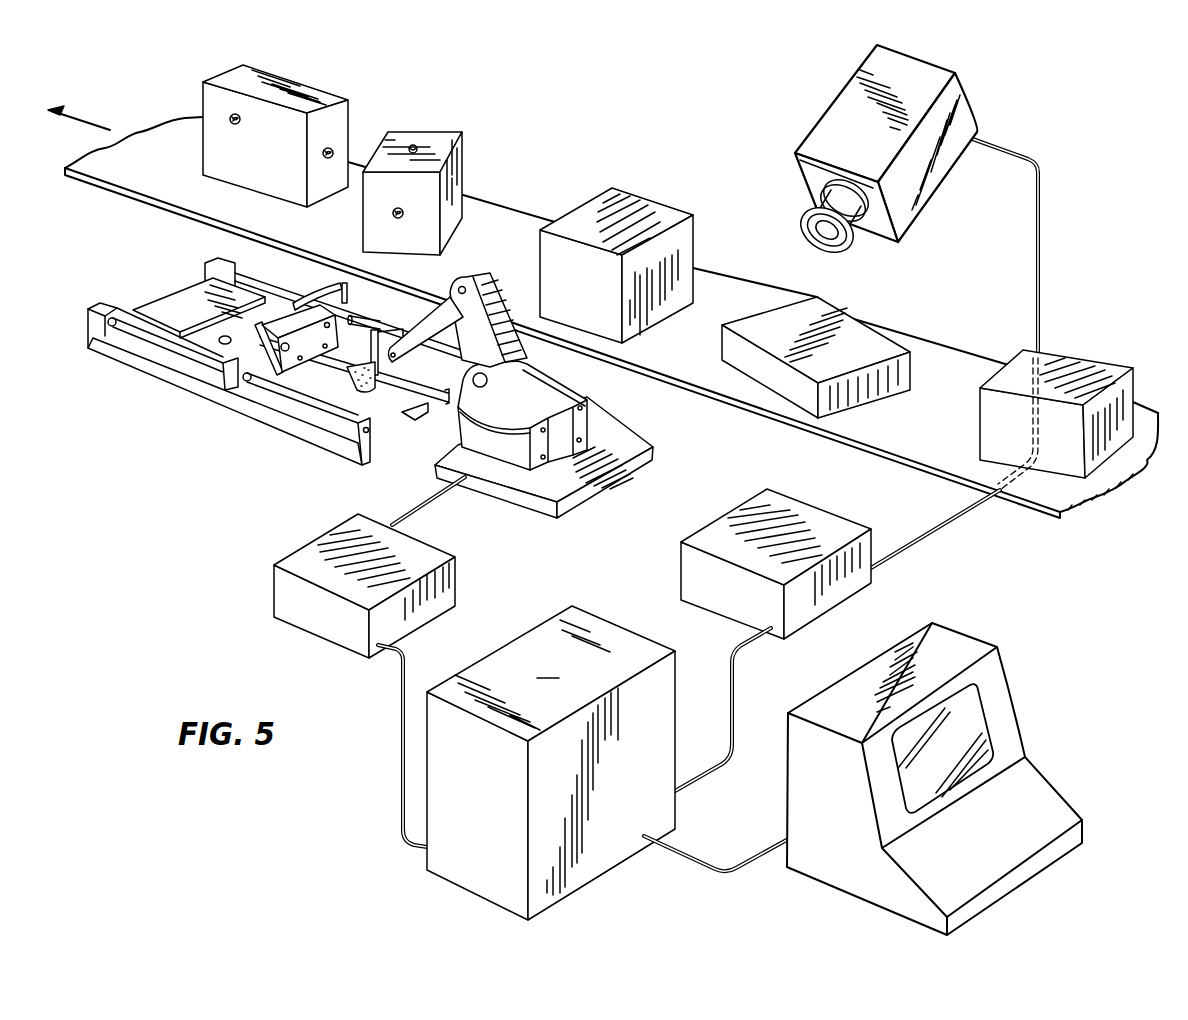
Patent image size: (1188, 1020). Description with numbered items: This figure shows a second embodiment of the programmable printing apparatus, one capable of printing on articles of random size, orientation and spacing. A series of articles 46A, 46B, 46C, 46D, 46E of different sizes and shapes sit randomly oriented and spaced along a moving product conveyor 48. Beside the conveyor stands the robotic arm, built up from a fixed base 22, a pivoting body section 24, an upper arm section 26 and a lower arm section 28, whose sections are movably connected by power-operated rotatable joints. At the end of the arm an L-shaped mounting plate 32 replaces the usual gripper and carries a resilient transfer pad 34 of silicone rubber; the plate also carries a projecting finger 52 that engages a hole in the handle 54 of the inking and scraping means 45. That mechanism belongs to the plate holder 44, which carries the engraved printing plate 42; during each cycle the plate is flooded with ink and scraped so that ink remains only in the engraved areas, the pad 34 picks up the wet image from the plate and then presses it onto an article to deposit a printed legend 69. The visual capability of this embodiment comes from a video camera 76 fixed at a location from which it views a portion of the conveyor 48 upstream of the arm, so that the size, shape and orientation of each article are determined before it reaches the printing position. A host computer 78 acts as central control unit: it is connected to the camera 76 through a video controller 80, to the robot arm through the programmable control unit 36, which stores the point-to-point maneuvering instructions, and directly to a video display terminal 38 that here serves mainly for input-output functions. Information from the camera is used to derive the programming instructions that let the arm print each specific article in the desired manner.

The fixed base 22 is at (623, 447).
The pivoting body section 24 is at (587, 413).
The upper arm section 26 is at (503, 303).
The lower arm section 28 is at (432, 308).
The L-shaped mounting plate 32 is at (383, 378).
The resilient transfer pad 34 is at (353, 382).
The programmable control unit 36 is at (268, 574).
The video display terminal 38 is at (1002, 699).
The engraved printing plate 42 is at (375, 427).
The plate holder 44 is at (279, 373).
The inking and scraping means 45 is at (199, 308).
The article 46A is at (340, 91).
The article 46B is at (424, 192).
The article 46C is at (657, 208).
The article 46D is at (857, 338).
The article 46E is at (1080, 367).
The product conveyor 48 is at (1042, 490).
The projecting finger 52 is at (392, 300).
The handle 54 is at (325, 297).
The printed legend 69 is at (393, 213).
The video camera 76 is at (910, 197).
The host computer 78 is at (551, 763).
The video controller 80 is at (711, 536).